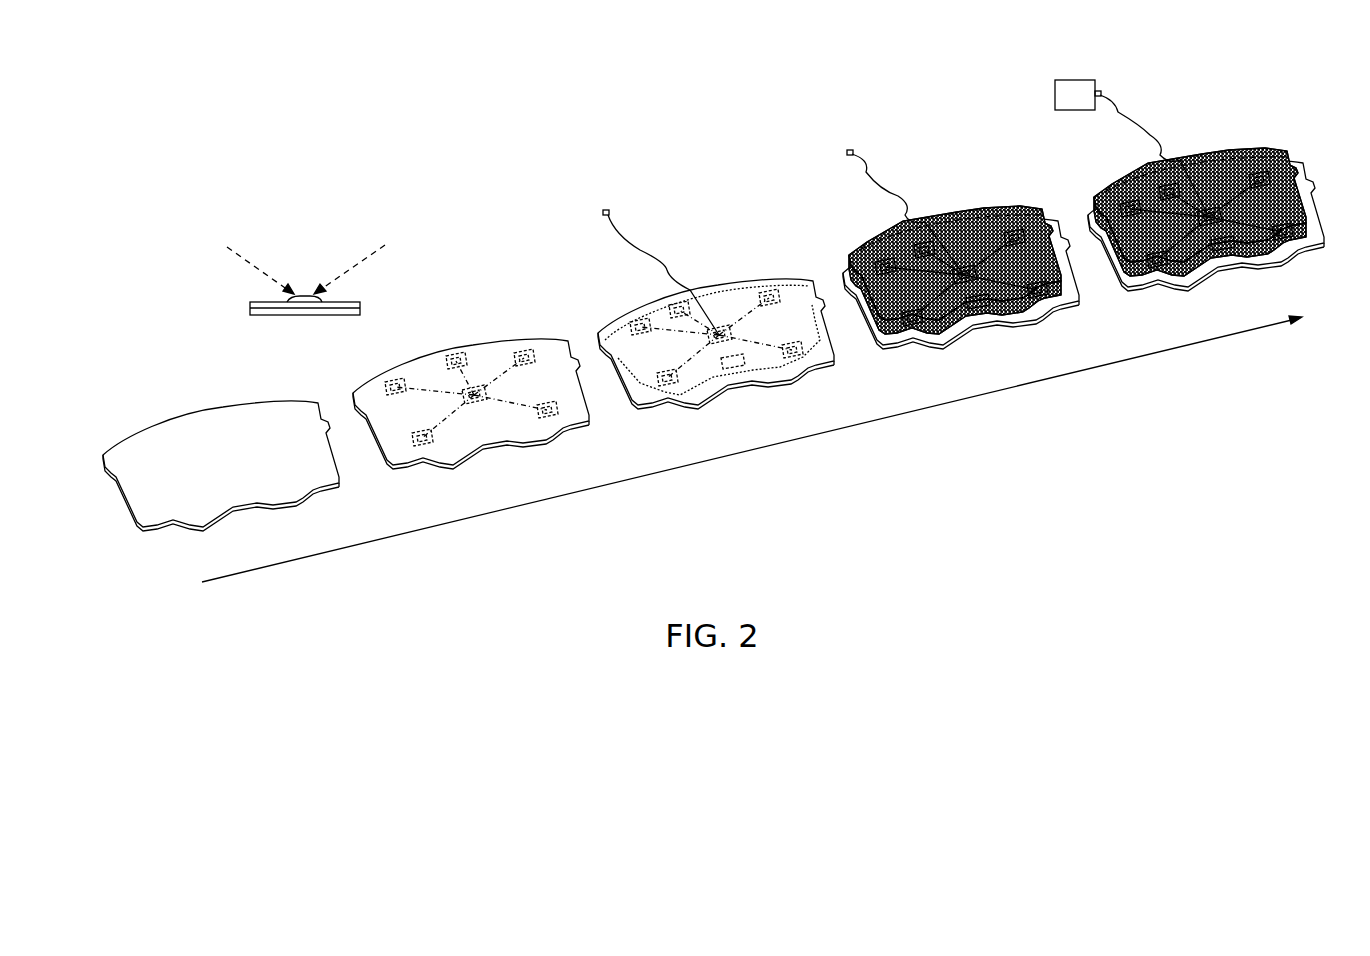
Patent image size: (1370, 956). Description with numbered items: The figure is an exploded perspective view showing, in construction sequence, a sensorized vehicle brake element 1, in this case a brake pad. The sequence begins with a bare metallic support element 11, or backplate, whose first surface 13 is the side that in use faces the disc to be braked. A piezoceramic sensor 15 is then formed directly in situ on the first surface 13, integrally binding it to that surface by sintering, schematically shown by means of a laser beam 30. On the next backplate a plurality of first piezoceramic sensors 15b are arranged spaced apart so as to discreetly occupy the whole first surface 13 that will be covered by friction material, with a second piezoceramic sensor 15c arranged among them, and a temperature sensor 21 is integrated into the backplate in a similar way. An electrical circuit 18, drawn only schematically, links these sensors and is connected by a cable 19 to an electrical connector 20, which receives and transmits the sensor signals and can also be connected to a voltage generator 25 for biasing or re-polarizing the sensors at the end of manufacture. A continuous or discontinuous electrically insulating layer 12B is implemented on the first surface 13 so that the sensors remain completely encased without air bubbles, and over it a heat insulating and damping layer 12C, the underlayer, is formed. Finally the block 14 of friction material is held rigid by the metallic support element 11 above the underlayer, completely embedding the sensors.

The sensorized vehicle brake element 1 is at (1310, 116).
The metallic support element 11 is at (145, 521).
The first surface 13 is at (148, 438).
The block of friction material 14 is at (970, 236).
The piezoceramic sensor 15 is at (303, 297).
The first piezoceramic sensors 15b is at (518, 352).
The second piezoceramic sensor 15c is at (462, 390).
The electrical circuit 18 is at (465, 358).
The cable 19 is at (670, 266).
The electrical connector 20 is at (606, 210).
The temperature sensor 21 is at (735, 370).
The voltage generator 25 is at (1055, 90).
The laser beam 30 is at (252, 262).
The electrically insulating layer 12B is at (668, 405).
The heat insulating and damping layer 12C is at (752, 280).